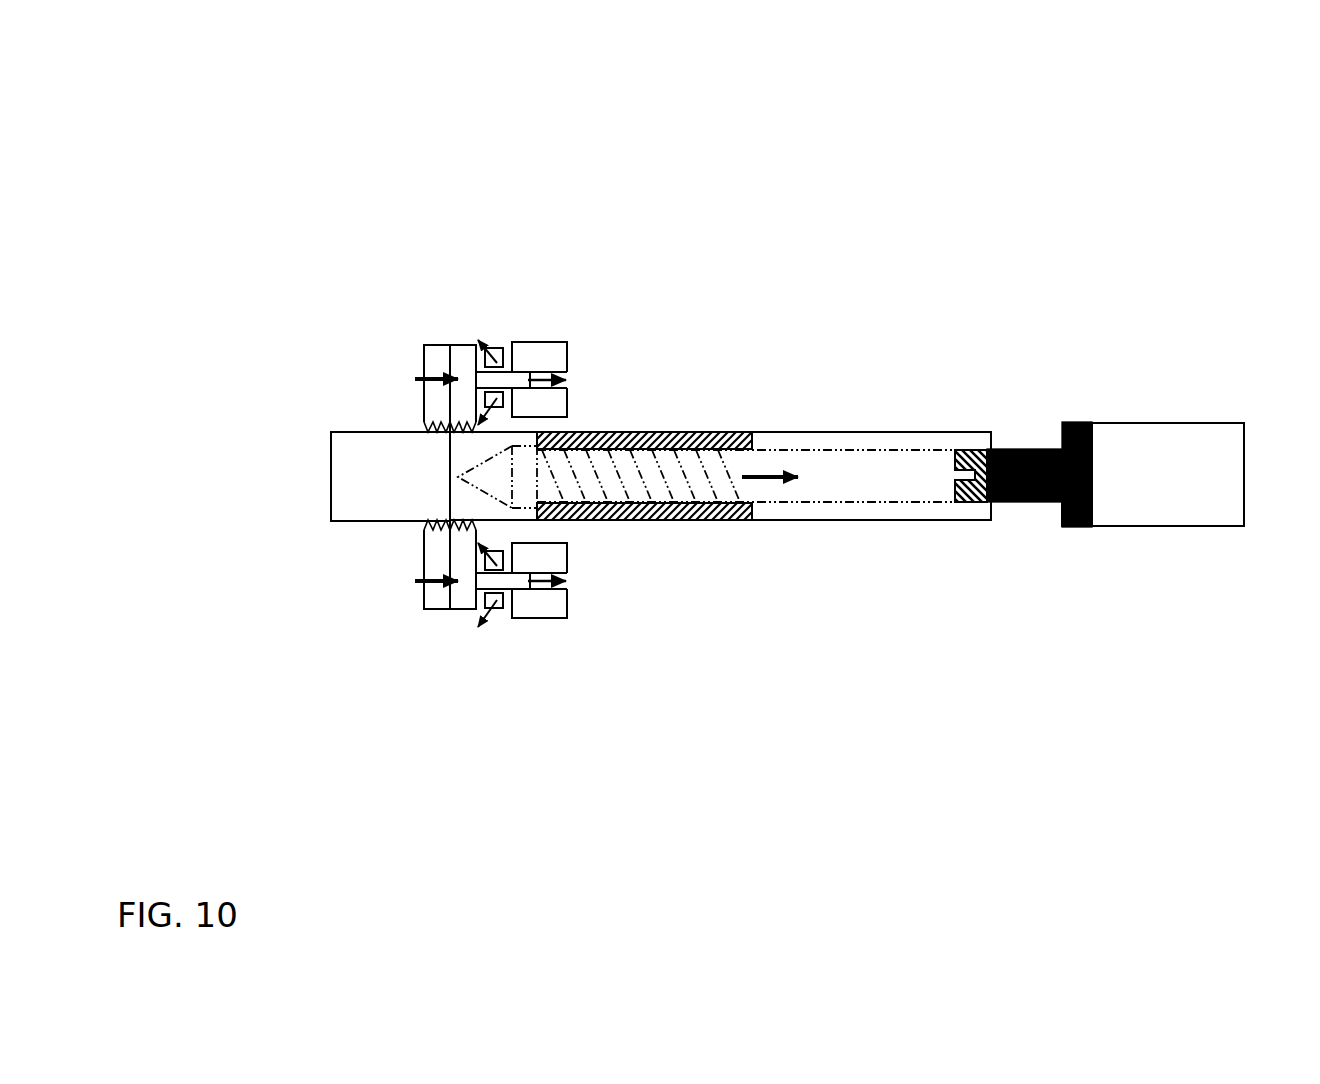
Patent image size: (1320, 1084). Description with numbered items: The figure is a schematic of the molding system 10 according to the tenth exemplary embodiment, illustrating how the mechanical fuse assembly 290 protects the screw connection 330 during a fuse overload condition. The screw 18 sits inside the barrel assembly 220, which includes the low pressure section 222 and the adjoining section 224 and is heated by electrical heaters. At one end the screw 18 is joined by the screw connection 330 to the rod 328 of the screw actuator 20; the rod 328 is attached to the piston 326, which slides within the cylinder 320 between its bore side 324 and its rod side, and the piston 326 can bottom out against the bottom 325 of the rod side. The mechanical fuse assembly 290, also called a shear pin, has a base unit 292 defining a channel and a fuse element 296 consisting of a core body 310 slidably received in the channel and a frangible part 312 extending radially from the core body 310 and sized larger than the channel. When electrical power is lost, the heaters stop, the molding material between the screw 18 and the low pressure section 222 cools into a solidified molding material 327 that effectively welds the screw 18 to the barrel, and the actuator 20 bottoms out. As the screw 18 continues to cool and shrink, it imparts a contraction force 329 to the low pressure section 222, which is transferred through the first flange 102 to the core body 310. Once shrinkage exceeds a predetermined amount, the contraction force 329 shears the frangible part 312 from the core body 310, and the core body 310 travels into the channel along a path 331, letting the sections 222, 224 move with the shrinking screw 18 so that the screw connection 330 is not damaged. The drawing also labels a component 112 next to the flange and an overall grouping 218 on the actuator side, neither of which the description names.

The molding system 10 is at (1252, 167).
The screw 18 is at (889, 486).
The screw actuator 20 is at (995, 257).
The first flange 102 is at (463, 610).
The feed block 112 is at (437, 610).
The extrusion head assembly 218 is at (1147, 170).
The barrel assembly 220 is at (1082, 222).
The low pressure section 222 is at (793, 520).
The barrel section 224 is at (330, 476).
The mechanical fuse assembly 290 is at (434, 127).
The base unit 292 is at (540, 342).
The fuse element 296 is at (545, 212).
The core body 310 is at (522, 372).
The frangible part 312 is at (497, 347).
The cylinder 320 is at (1100, 335).
The bore side 324 is at (1212, 435).
The bottom of the rod side 325 is at (1062, 515).
The piston 326 is at (1077, 527).
The solidified molding material 327 is at (677, 520).
The rod 328 is at (1040, 502).
The contraction force 329 is at (420, 378).
The screw connection 330 is at (963, 450).
The path 331 is at (548, 376).